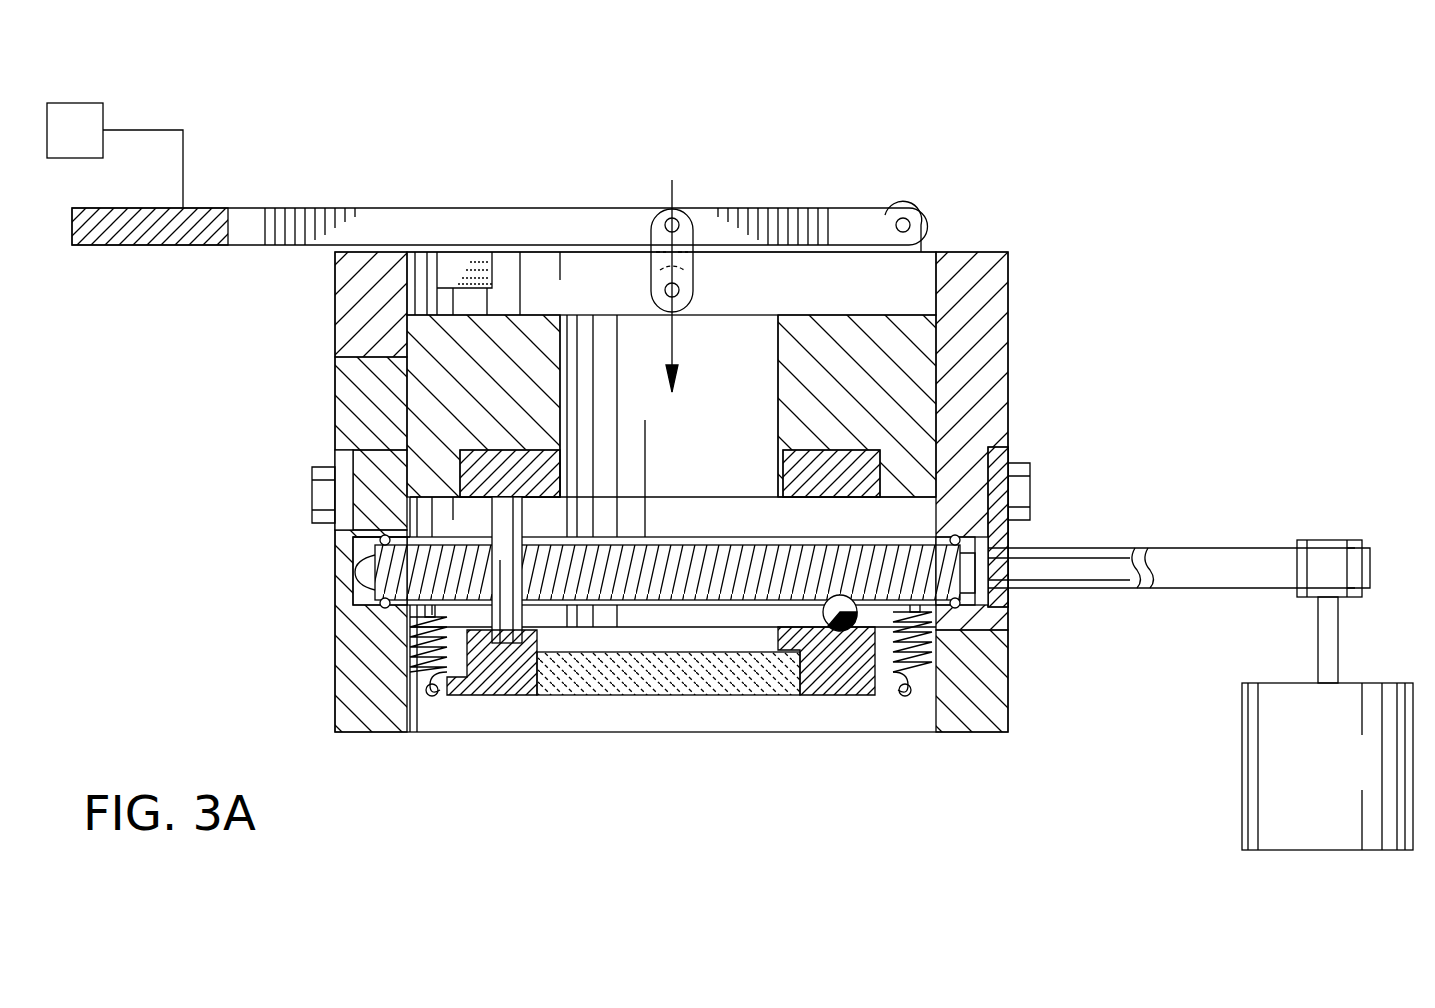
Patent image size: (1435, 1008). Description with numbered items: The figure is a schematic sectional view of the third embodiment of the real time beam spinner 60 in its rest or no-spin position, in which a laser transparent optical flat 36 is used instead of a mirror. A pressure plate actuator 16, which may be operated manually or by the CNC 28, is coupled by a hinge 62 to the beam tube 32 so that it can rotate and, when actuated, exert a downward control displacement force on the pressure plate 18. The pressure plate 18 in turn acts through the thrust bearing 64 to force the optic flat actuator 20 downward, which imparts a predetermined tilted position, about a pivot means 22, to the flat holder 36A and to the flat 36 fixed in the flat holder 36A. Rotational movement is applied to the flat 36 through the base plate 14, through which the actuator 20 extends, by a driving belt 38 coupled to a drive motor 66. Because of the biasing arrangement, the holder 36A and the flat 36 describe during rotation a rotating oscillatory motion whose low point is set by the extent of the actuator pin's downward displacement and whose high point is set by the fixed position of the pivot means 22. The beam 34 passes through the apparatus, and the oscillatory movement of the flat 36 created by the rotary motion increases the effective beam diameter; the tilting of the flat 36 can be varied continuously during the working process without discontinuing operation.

The base plate 14 is at (965, 548).
The pressure plate actuator 16 is at (182, 246).
The pressure plate 18 is at (915, 347).
The optic flat actuator 20 is at (503, 696).
The pivot means 22 is at (837, 629).
The CNC 28 is at (92, 143).
The beam tube 32 is at (990, 395).
The beam 34 is at (676, 338).
The optical flat 36 is at (724, 696).
The flat holder 36A is at (470, 696).
The driving belt 38 is at (1147, 562).
The real time beam spinner 60 is at (1074, 236).
The hinge 62 is at (912, 208).
The thrust bearing 64 is at (783, 472).
The drive motor 66 is at (1345, 777).